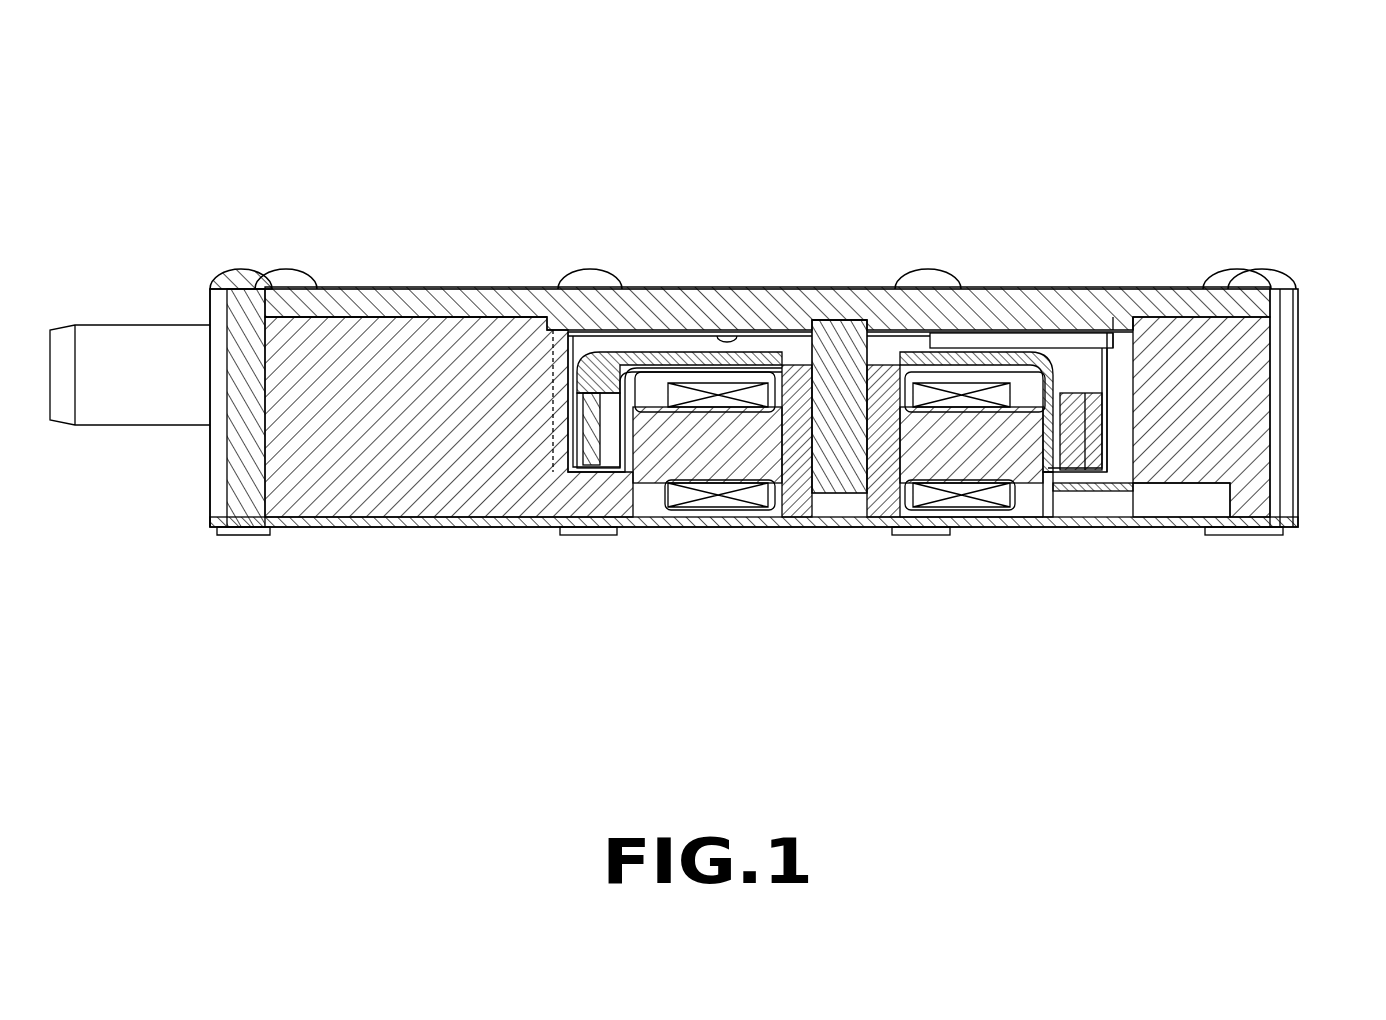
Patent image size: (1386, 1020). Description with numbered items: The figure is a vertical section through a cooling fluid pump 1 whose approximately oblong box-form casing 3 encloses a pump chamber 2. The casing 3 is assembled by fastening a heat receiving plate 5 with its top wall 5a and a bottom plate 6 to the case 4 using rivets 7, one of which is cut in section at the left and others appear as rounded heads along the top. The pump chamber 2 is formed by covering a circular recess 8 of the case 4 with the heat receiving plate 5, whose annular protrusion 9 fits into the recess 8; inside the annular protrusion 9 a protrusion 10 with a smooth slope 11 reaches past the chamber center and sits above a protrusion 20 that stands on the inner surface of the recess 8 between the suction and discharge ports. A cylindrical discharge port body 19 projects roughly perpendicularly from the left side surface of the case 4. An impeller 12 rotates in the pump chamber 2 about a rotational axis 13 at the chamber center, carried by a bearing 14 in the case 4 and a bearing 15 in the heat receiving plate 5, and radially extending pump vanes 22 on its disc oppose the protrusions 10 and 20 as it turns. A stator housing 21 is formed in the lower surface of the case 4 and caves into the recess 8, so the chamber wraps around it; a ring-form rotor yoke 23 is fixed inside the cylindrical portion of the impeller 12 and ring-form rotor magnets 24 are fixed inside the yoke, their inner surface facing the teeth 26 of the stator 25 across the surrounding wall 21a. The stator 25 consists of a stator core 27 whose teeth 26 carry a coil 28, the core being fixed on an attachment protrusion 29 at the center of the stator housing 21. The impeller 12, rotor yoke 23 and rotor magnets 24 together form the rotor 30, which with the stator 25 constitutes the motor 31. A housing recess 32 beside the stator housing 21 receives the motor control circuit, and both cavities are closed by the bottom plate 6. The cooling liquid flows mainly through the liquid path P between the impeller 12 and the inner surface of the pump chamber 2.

The fluid pump 1 is at (440, 205).
The pump chamber 2 is at (1135, 500).
The casing 3 is at (1190, 283).
The case 4 is at (207, 467).
The heat receiving plate 5 is at (210, 300).
The top wall 5a is at (495, 287).
The bottom plate 6 is at (407, 527).
The rivets 7 is at (240, 268).
The circular recess 8 is at (1120, 317).
The annular protrusion 9 is at (1153, 287).
The protrusion 10 is at (718, 330).
The smooth slope 11 is at (980, 333).
The impeller 12 is at (1130, 402).
The rotational axis 13 is at (845, 495).
The bearing 14 is at (845, 490).
The bearing 15 is at (840, 320).
The discharge port body 19 is at (90, 323).
The protrusion 20 is at (585, 332).
The stator housing 21 is at (640, 475).
The surrounding wall 21a is at (605, 470).
The pump vanes 22 is at (1032, 348).
The rotor yoke 23 is at (1090, 491).
The rotor magnets 24 is at (1050, 500).
The stator 25 is at (915, 509).
The teeth 26 is at (655, 485).
The stator core 27 is at (720, 507).
The coil 28 is at (962, 507).
The attachment protrusion 29 is at (762, 510).
The rotor 30 is at (1118, 438).
The motor 31 is at (990, 565).
The housing recess 32 is at (1215, 505).
The liquid path P is at (1130, 380).